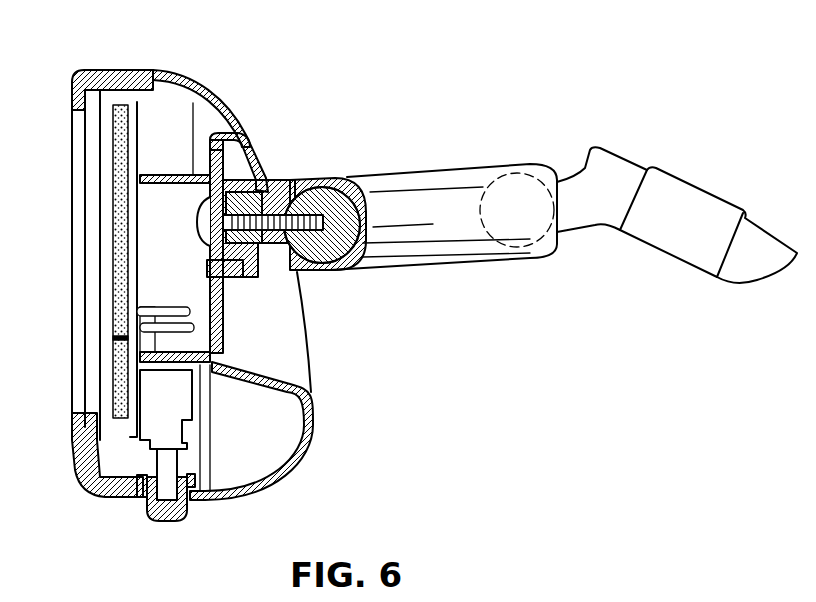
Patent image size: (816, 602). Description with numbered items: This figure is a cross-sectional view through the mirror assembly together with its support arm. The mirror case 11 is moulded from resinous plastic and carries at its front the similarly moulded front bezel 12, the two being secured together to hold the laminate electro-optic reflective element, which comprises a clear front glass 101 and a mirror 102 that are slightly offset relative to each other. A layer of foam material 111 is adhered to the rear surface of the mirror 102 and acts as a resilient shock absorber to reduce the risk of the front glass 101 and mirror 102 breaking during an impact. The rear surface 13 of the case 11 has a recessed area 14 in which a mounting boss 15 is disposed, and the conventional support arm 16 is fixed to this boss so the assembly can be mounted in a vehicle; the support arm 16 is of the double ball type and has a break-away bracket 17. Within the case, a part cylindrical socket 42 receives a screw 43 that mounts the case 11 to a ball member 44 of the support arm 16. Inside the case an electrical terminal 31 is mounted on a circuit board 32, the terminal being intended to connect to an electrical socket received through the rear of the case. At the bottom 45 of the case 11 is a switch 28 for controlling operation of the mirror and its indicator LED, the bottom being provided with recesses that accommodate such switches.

The mirror case 11 is at (204, 276).
The front bezel 12 is at (112, 67).
The rear surface 13 is at (220, 100).
The recessed area 14 is at (240, 150).
The mounting boss 15 is at (263, 177).
The support arm 16 is at (440, 167).
The break-away bracket 17 is at (693, 233).
The switch 28 is at (187, 513).
The electrical terminal 31 is at (217, 337).
The circuit board 32 is at (133, 338).
The part cylindrical socket 42 is at (168, 173).
The screw 43 is at (200, 222).
The ball member 44 is at (343, 270).
The bottom 45 is at (213, 498).
The front glass 101 is at (93, 192).
The mirror 102 is at (107, 258).
The layer of foam material 111 is at (113, 313).